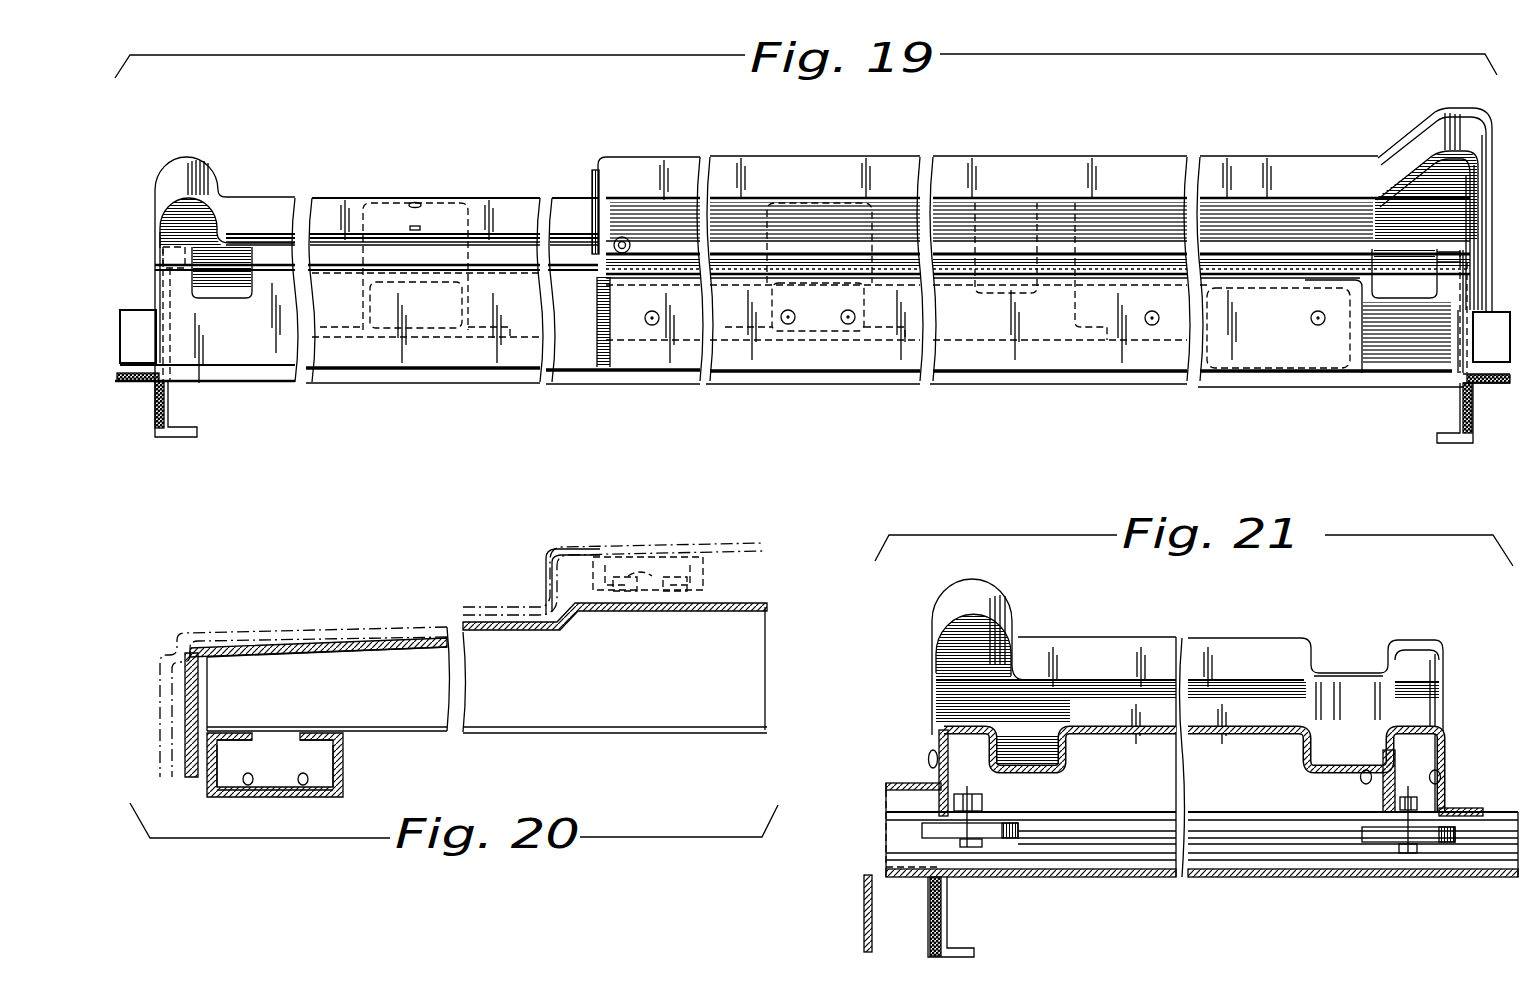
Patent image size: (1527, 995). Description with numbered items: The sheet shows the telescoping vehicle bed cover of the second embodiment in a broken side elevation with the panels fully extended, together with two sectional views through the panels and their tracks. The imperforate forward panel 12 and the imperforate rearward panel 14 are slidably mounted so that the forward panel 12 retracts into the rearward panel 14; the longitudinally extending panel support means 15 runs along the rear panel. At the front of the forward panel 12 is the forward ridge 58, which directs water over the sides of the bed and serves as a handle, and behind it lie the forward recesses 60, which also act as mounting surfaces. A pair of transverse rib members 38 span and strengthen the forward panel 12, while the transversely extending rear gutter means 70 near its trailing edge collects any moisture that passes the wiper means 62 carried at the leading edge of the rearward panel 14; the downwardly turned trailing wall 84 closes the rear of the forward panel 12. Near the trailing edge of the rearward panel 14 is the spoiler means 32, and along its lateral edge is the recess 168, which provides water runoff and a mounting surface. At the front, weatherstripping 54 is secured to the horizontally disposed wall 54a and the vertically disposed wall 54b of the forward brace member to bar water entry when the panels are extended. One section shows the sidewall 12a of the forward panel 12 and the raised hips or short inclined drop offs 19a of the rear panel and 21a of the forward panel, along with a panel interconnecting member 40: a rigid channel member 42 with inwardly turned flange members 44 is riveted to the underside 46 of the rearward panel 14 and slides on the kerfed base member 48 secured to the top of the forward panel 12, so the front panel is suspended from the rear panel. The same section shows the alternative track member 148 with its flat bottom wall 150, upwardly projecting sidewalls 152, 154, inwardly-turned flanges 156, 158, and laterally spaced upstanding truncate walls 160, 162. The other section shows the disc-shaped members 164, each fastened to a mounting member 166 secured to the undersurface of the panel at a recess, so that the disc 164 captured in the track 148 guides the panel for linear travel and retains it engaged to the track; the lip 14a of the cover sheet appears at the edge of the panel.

In FIG. 19, the forward panel 12 is at (317, 198).
In FIG. 20, the forward panel 12 is at (292, 647).
In FIG. 21, the forward panel 12 is at (1188, 638).
In FIG. 20, the sidewall of front panel 12a is at (186, 720).
In FIG. 19, the rearward panel 14 is at (717, 156).
In FIG. 20, the rearward panel 14 is at (360, 625).
In FIG. 20, the cover sheet lip 14a is at (158, 690).
In FIG. 19, the panel support means 15 is at (1470, 207).
In FIG. 20, the raised hip 19a is at (550, 568).
In FIG. 20, the raised hip 21a is at (548, 600).
In FIG. 19, the spoiler means 32 is at (1430, 138).
In FIG. 19, the rib members 38 is at (372, 205).
In FIG. 20, the panel interconnecting members 40 is at (722, 570).
In FIG. 20, the channel member 42 is at (765, 602).
In FIG. 20, the flange members 44 is at (600, 595).
In FIG. 20, the underside of rear panel 46 is at (768, 548).
In FIG. 20, the base member 48 is at (643, 595).
In FIG. 19, the weatherstripping 54 is at (158, 397).
In FIG. 19, the horizontally disposed wall of forward brace member 54a is at (113, 362).
In FIG. 19, the vertically disposed wall of forward brace member 54b is at (172, 405).
In FIG. 19, the forward ridge 58 is at (205, 165).
In FIG. 21, the forward ridge 58 is at (952, 599).
In FIG. 19, the forward recess 60 is at (223, 295).
In FIG. 21, the forward recess 60 is at (1054, 770).
In FIG. 19, the wiper means 62 is at (586, 171).
In FIG. 19, the rear gutter means 70 is at (1000, 290).
In FIG. 21, the rear gutter means 70 is at (1334, 720).
In FIG. 19, the trailing wall of forward panel 84 is at (1082, 265).
In FIG. 21, the trailing wall of forward panel 84 is at (1446, 727).
In FIG. 20, the track member 148 is at (224, 808).
In FIG. 20, the flat bottom wall 150 is at (272, 800).
In FIG. 20, the sidewall of track member 152 is at (215, 785).
In FIG. 20, the inner vertical wall of track member 154 is at (345, 785).
In FIG. 20, the inwardly-turned flange 156 is at (230, 733).
In FIG. 20, the inwardly-turned flange 158 is at (318, 733).
In FIG. 20, the upstanding truncate wall 160 is at (250, 785).
In FIG. 20, the upstanding truncate wall 162 is at (310, 780).
In FIG. 21, the disc-shaped member 164 is at (994, 830).
In FIG. 21, the mounting member 166 is at (941, 808).
In FIG. 19, the recess 168 is at (1452, 266).